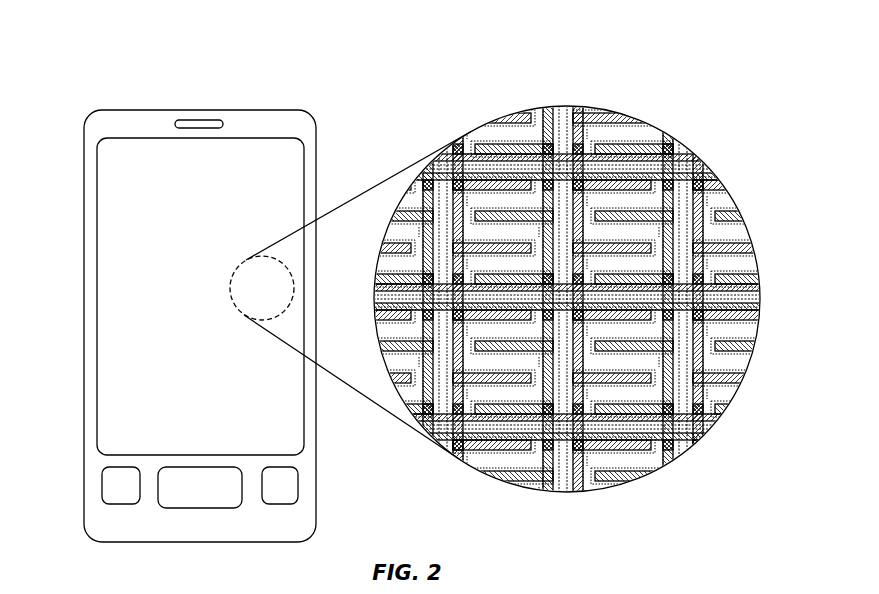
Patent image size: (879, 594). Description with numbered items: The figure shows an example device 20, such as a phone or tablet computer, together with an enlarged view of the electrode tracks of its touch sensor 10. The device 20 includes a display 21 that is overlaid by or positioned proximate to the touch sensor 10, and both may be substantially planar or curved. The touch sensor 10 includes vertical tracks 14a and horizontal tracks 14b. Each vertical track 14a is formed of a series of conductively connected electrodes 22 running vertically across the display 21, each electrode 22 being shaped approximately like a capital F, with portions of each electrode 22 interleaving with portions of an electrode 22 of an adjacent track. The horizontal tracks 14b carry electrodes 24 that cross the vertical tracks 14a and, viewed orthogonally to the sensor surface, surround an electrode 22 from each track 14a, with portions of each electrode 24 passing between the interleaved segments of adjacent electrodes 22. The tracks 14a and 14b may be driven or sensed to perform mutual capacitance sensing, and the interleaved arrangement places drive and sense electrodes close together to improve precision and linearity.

The touch sensor 10 is at (536, 62).
The device 20 is at (84, 319).
The display 21 is at (160, 163).
The electrode 22 is at (538, 208).
The electrode 24 is at (549, 183).
The vertical track 14a is at (427, 452).
The horizontal track 14b is at (704, 159).